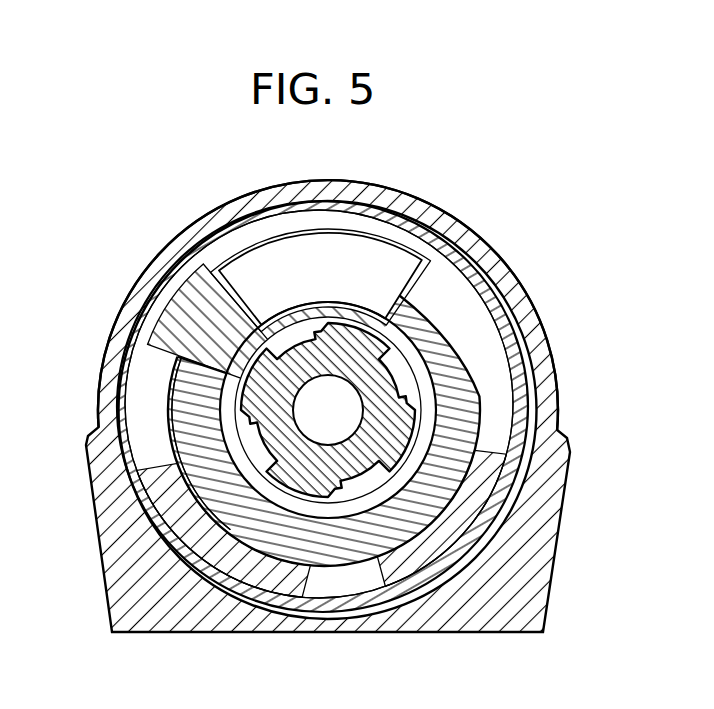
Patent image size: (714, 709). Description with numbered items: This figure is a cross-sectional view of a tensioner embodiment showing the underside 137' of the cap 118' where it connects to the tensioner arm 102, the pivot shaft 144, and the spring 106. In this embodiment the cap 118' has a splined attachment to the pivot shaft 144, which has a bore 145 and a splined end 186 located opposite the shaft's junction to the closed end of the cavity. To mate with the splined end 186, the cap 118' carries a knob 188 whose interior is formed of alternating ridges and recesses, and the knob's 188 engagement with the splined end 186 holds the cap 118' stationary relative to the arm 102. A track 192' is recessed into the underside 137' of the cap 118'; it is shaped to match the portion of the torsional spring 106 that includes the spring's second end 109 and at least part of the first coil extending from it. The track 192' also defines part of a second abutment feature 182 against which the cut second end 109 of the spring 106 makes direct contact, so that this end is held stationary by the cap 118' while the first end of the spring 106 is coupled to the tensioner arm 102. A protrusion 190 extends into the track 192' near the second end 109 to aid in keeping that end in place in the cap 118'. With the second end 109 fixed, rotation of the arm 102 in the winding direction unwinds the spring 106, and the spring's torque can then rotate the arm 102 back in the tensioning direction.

The tensioner arm 102 is at (537, 557).
The cap 118' is at (328, 288).
The splined end 186 is at (395, 292).
The underside 137' is at (306, 394).
The knob 188 is at (311, 313).
The second abutment feature 182 is at (190, 347).
The second end of the spring 109 is at (190, 378).
The spring 106 is at (190, 452).
The track 192' is at (441, 565).
The protrusion 190 is at (227, 567).
The pivot shaft 144 is at (365, 353).
The bore 145 is at (328, 376).